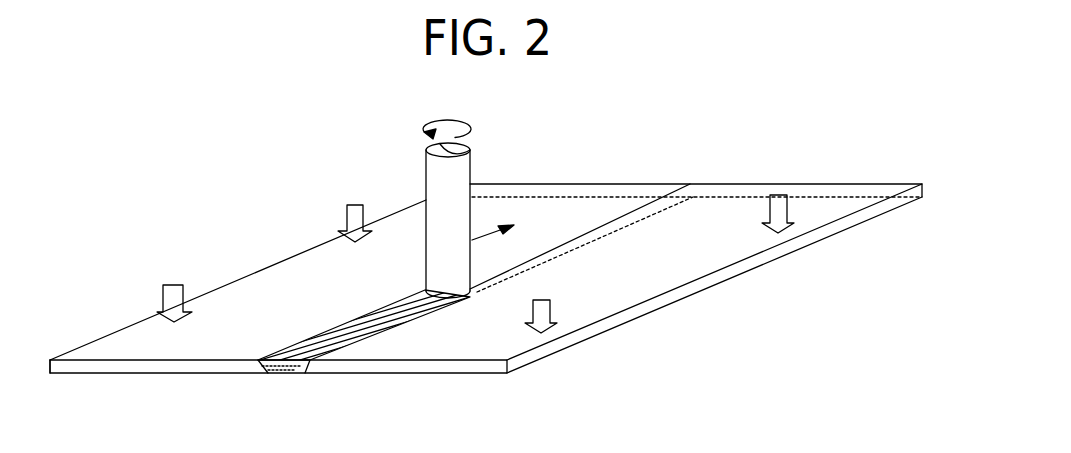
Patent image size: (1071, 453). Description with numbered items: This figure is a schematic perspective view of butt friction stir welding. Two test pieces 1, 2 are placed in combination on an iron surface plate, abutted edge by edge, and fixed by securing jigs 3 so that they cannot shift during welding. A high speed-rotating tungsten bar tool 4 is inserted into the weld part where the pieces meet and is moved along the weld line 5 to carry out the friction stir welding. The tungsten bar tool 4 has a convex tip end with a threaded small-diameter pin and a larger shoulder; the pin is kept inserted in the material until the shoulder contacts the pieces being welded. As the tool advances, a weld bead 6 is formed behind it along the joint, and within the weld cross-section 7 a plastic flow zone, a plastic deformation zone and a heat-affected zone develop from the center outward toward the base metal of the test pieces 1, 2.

The test piece 1 is at (123, 337).
The test piece 2 is at (830, 207).
The securing jig 3 is at (542, 312).
The tungsten bar tool 4 is at (426, 186).
The weld line 5 is at (607, 222).
The weld bead 6 is at (360, 312).
The weld cross-section 7 is at (274, 377).